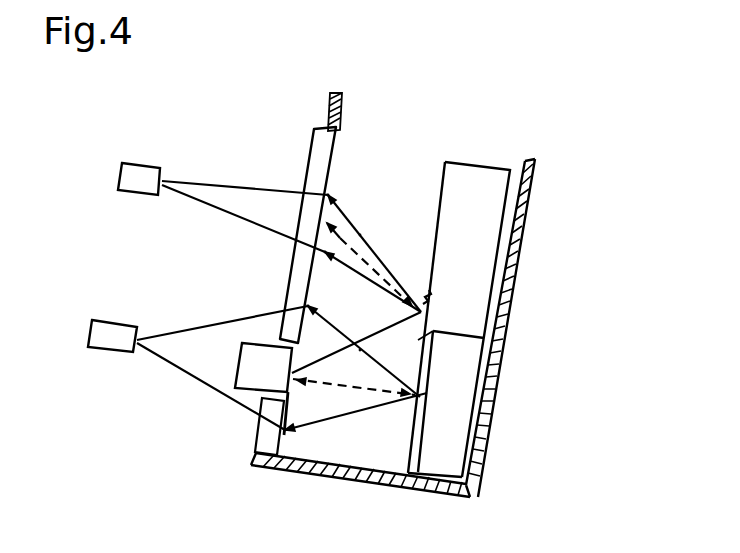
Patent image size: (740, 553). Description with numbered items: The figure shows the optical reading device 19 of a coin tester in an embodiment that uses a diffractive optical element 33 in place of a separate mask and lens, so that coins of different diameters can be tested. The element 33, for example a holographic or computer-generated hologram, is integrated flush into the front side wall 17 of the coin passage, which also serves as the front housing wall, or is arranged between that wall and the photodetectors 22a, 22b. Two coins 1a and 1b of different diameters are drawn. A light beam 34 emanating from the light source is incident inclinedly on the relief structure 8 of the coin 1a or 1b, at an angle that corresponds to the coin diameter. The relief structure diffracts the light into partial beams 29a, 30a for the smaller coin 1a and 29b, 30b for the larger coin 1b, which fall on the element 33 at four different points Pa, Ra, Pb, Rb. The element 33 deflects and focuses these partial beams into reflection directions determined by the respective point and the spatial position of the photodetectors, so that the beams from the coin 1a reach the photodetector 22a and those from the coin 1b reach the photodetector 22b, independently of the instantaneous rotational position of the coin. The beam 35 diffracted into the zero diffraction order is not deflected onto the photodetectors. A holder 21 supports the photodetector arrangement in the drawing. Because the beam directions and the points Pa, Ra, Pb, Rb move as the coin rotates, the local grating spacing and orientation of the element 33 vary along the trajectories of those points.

The front side wall 17 is at (339, 100).
The diffractive optical element 33 is at (322, 148).
The photodetector 22a is at (102, 332).
The photodetector 22b is at (127, 185).
The holder 21 is at (240, 378).
The optical reading device 19 is at (150, 497).
The partial beam 30a is at (333, 387).
The partial beam 30b is at (348, 238).
The partial beam 29a is at (360, 355).
The partial beam 29b is at (348, 216).
The zero-order beam 35 is at (377, 253).
The relief structure 8 is at (433, 283).
The coin 1a is at (453, 442).
The coin 1b is at (477, 295).
The light beam 34 is at (433, 345).
The point of incidence Ra is at (317, 300).
The point of incidence Rb is at (341, 183).
The point of incidence Pa is at (295, 442).
The point of incidence Pb is at (324, 266).